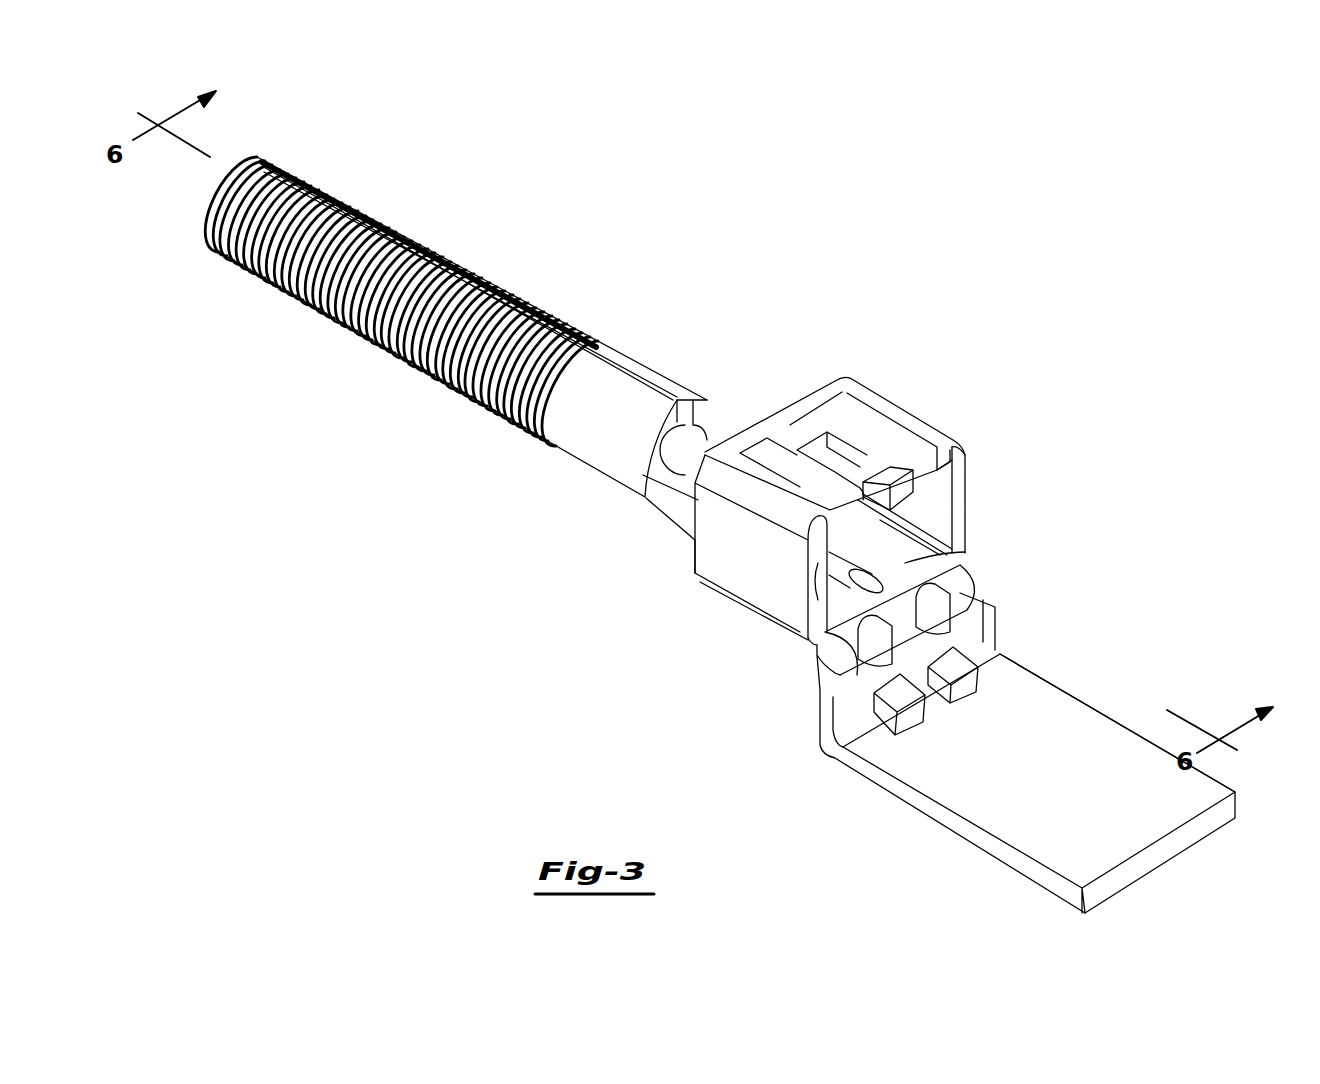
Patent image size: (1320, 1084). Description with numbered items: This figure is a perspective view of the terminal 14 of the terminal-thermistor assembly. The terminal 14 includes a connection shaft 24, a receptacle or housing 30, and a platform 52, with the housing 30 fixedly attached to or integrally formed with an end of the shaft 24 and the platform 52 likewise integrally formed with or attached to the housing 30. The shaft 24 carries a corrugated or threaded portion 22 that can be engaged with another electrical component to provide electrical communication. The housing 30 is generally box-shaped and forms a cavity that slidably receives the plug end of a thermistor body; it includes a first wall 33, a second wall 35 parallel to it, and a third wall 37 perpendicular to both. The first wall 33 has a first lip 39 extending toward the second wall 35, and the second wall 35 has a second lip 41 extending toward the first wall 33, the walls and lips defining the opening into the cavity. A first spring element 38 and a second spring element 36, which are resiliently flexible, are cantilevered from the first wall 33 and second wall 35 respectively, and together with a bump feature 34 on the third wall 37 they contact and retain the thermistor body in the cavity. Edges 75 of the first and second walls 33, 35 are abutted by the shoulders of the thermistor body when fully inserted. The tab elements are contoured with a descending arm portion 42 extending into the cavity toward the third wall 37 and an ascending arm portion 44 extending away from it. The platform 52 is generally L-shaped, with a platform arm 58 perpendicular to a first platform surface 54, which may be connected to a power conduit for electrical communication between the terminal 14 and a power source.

The terminal 14 is at (702, 601).
The threaded portion 22 is at (508, 290).
The connection shaft 24 is at (400, 333).
The housing 30 is at (943, 391).
The first wall 33 is at (720, 555).
The bump feature 34 is at (866, 548).
The second wall 35 is at (927, 477).
The second spring element 36 is at (802, 397).
The third wall 37 is at (965, 552).
The first spring element 38 is at (751, 416).
The first lip 39 is at (815, 551).
The second lip 41 is at (913, 440).
The descending arm portion 42 is at (840, 455).
The ascending arm portion 44 is at (885, 478).
The platform 52 is at (912, 826).
The first platform surface 54 is at (1130, 753).
The platform arm 58 is at (840, 673).
The edges 75 is at (958, 507).